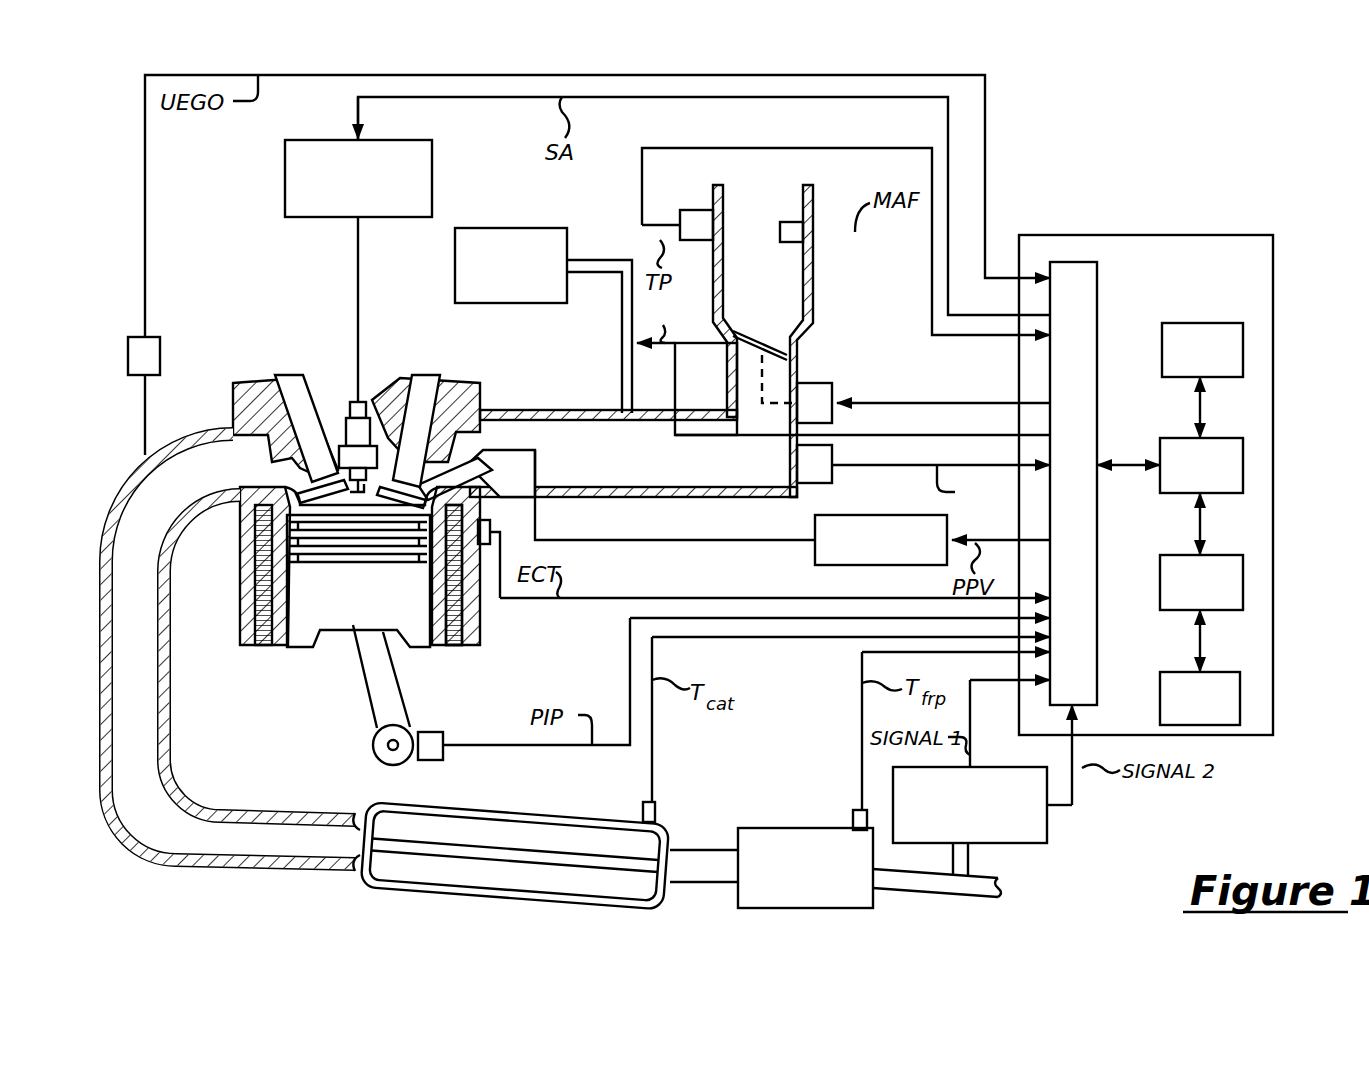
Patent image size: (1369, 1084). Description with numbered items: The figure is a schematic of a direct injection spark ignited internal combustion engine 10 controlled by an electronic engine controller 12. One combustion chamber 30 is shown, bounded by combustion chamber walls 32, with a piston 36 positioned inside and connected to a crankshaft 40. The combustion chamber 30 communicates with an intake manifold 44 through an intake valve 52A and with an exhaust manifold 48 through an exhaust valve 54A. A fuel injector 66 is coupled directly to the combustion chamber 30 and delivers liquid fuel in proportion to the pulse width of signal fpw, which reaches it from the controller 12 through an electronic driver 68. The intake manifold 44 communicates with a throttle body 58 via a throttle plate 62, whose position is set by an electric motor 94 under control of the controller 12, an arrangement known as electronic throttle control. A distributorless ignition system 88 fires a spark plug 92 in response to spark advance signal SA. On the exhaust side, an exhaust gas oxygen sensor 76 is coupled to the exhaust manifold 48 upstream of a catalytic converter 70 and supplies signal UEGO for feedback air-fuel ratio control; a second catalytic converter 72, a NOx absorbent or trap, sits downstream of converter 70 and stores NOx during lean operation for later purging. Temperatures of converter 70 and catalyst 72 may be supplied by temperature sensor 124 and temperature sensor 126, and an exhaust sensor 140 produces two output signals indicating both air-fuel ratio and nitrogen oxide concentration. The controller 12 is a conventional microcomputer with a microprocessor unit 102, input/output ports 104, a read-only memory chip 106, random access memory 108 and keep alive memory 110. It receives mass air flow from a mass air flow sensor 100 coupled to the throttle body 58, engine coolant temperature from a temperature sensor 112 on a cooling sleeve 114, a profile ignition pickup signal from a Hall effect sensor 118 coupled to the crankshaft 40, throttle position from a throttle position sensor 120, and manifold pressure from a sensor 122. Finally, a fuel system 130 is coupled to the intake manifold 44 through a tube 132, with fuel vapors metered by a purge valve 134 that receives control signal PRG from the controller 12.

The direct injection spark ignited internal combustion engine 10 is at (270, 338).
The electronic engine controller 12 is at (1145, 235).
The combustion chamber 30 is at (330, 512).
The combustion chamber walls 32 is at (290, 648).
The piston 36 is at (360, 625).
The crankshaft 40 is at (375, 748).
The intake manifold 44 is at (704, 480).
The exhaust manifold 48 is at (104, 486).
The intake valve 52A is at (435, 378).
The exhaust valve 54A is at (300, 476).
The throttle body 58 is at (748, 383).
The throttle plate 62 is at (762, 353).
The fuel injector 66 is at (533, 457).
The electronic driver 68 is at (815, 558).
The catalytic converter 70 is at (530, 812).
The catalytic converter 72 is at (795, 828).
The exhaust gas oxygen sensor 76 is at (128, 355).
The distributorless ignition system 88 is at (285, 175).
The spark plug 92 is at (355, 400).
The electric motor 94 is at (812, 395).
The mass air flow sensor 100 is at (790, 222).
The microprocessor unit 102 is at (1243, 465).
The input/output ports 104 is at (1097, 293).
The read-only memory chip 106 is at (1200, 323).
The random access memory 108 is at (1243, 580).
The keep alive memory 110 is at (1240, 695).
The temperature sensor 112 is at (490, 548).
The cooling sleeve 114 is at (462, 645).
The Hall effect sensor 118 is at (430, 760).
The throttle position sensor 120 is at (690, 210).
The manifold pressure sensor 122 is at (832, 472).
The temperature sensor 124 is at (655, 805).
The temperature sensor 126 is at (857, 812).
The fuel system 130 is at (508, 228).
The tube 132 is at (622, 324).
The purge valve 134 is at (622, 358).
The exhaust sensor 140 is at (1035, 843).